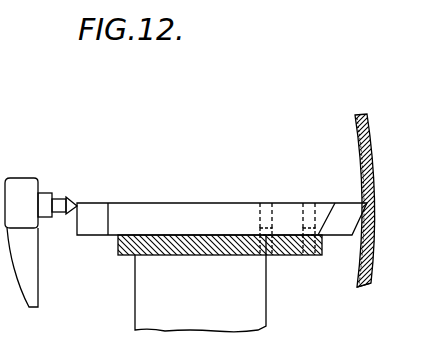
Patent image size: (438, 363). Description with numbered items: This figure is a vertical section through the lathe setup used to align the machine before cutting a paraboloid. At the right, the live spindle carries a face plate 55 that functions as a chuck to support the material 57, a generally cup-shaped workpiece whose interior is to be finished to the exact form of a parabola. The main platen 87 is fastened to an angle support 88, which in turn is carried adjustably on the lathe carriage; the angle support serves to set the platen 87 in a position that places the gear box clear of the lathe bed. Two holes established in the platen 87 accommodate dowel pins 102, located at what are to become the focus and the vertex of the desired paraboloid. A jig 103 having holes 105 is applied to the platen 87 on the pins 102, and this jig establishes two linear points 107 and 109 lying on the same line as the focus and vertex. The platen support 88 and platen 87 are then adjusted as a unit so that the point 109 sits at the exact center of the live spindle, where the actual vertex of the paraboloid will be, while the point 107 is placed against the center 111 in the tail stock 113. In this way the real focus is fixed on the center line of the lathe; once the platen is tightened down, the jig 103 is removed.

The tail stock 113 is at (22, 188).
The center 111 is at (58, 207).
The linear point 107 is at (77, 206).
The jig 103 is at (160, 212).
The linear point 109 is at (366, 203).
The holes 105 is at (300, 207).
The main platen 87 is at (118, 246).
The dowel pins 102 is at (305, 245).
The angle support 88 is at (140, 303).
The material 57 is at (358, 135).
The face plate 55 is at (364, 288).